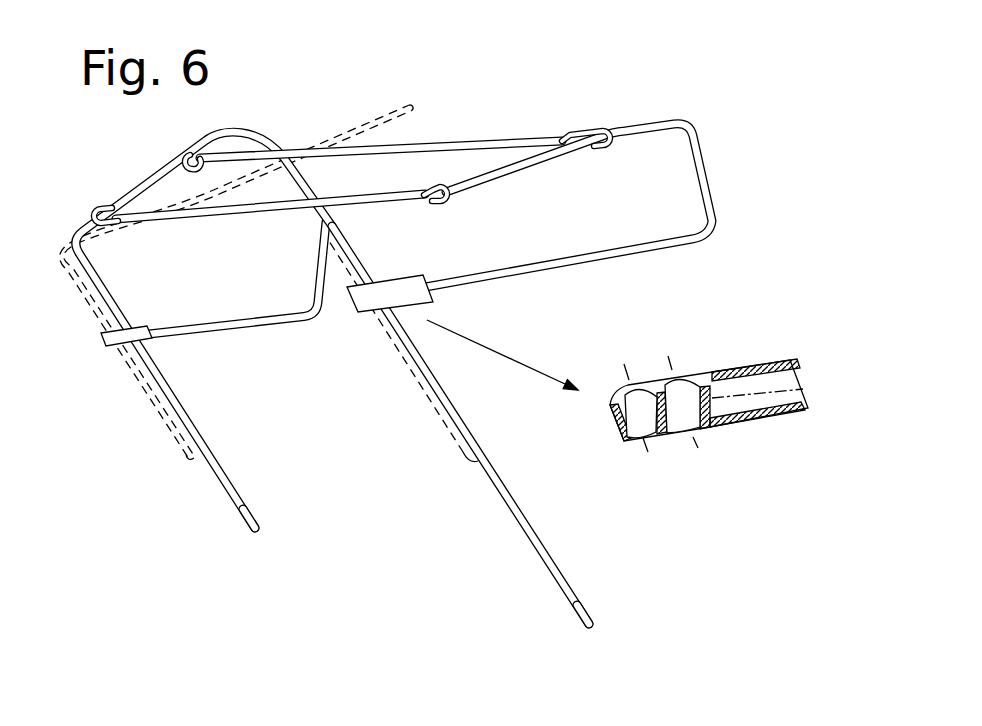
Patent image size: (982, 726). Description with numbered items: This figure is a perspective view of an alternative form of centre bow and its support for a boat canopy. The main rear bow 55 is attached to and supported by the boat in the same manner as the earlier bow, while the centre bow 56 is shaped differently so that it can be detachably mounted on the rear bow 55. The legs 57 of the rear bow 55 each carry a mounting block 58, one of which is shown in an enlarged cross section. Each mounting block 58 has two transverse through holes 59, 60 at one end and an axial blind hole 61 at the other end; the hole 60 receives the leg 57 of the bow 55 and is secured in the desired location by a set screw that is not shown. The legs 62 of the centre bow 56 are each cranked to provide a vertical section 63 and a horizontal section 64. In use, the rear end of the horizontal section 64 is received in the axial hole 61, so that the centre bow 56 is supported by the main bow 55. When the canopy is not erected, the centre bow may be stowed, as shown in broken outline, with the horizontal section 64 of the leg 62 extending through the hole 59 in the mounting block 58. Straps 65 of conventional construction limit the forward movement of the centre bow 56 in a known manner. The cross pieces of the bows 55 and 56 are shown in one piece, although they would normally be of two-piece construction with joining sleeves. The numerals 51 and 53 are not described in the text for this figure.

The tubular frame 51 is at (332, 410).
The clamp plate 53 is at (352, 311).
The main rear bow 55 is at (515, 518).
The centre bow 56 is at (350, 127).
The legs 57 is at (227, 493).
The mounting block 58 is at (112, 345).
The transverse through hole 59 is at (650, 428).
The transverse through hole 60 is at (693, 412).
The axial blind hole 61 is at (807, 392).
The legs 62 is at (747, 201).
The vertical section 63 is at (701, 148).
The horizontal section 64 is at (240, 328).
The straps 65 is at (420, 146).